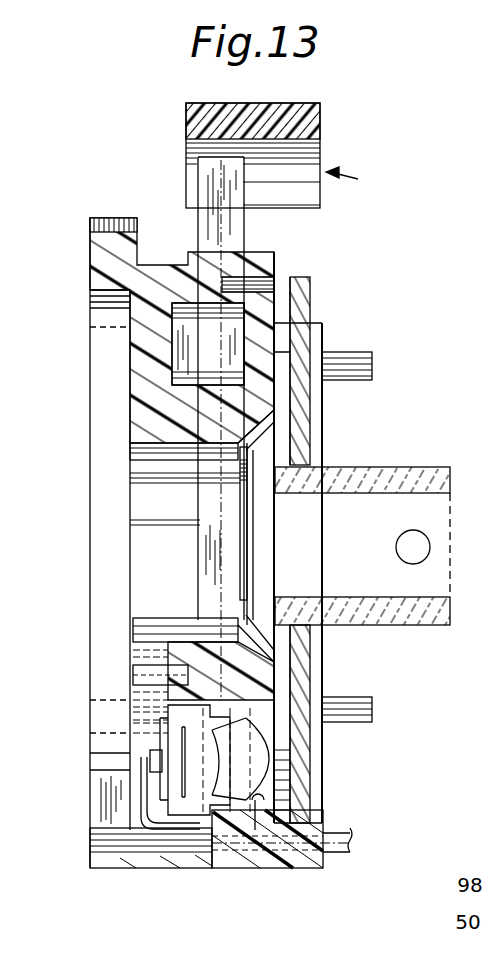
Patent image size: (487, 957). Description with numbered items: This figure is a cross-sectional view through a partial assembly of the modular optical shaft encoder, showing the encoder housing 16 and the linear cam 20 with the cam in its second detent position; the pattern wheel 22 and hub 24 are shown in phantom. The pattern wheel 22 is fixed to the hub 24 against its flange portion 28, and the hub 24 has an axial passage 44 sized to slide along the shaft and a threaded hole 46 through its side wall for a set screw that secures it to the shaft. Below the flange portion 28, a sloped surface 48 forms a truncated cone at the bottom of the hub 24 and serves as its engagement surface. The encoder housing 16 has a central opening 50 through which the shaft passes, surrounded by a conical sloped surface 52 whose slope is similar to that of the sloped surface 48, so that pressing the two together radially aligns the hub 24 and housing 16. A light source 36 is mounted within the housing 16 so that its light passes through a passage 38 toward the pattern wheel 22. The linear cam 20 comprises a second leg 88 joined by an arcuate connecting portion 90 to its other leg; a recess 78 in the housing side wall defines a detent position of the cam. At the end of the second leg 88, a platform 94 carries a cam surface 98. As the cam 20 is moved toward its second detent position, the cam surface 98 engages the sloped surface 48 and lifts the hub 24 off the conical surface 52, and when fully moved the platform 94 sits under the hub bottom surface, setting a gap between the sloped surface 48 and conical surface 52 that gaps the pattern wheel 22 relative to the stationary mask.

The encoder housing 16 is at (105, 281).
The linear cam 20 is at (359, 181).
The pattern wheel 22 is at (314, 291).
The hub 24 is at (385, 626).
The flange portion 28 is at (300, 432).
The light source 36 is at (173, 780).
The passage 38 is at (255, 812).
The axial passage 44 is at (415, 493).
The threaded hole 46 is at (432, 565).
The sloped surface 48 is at (152, 660).
The central opening 50 is at (165, 617).
The conical sloped surface 52 is at (263, 555).
The recess 78 is at (278, 345).
The second leg 88 is at (238, 230).
The connecting portion 90 is at (318, 125).
The platform 94 is at (237, 537).
The cam surface 98 is at (240, 464).